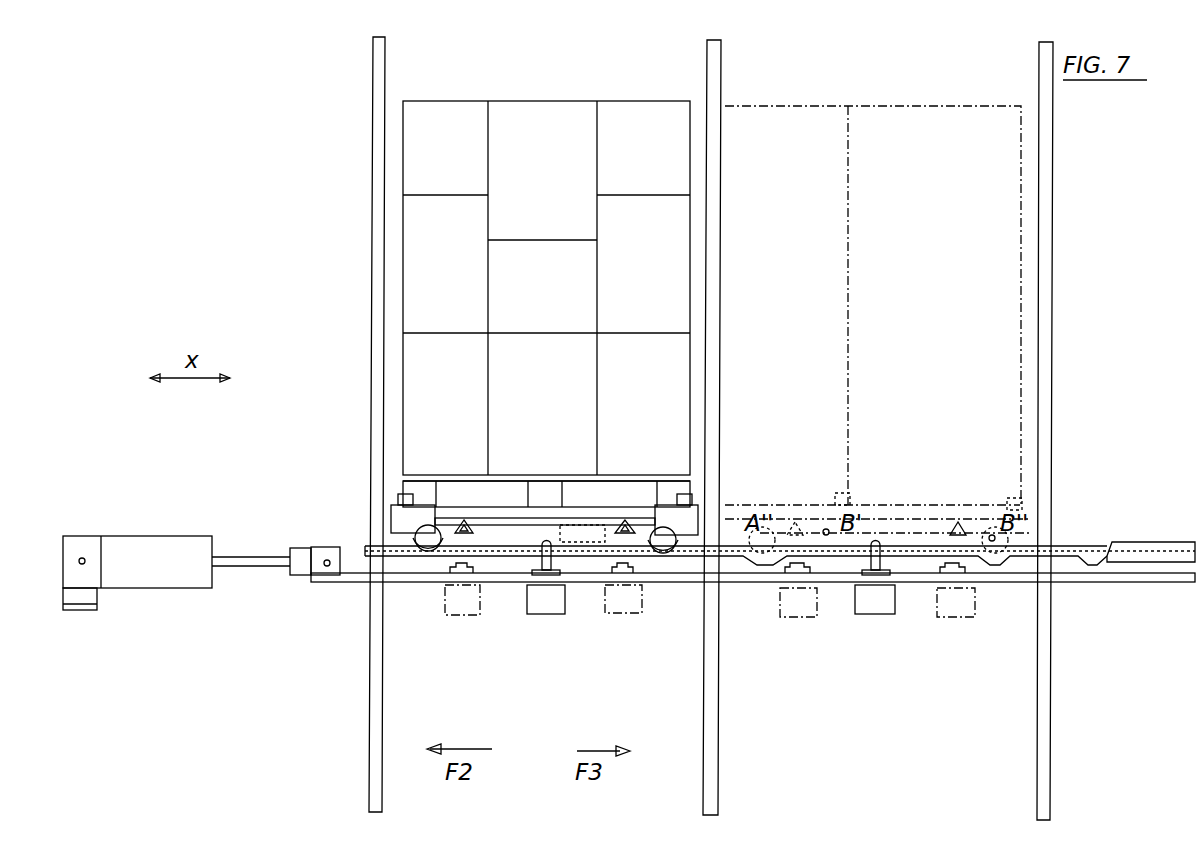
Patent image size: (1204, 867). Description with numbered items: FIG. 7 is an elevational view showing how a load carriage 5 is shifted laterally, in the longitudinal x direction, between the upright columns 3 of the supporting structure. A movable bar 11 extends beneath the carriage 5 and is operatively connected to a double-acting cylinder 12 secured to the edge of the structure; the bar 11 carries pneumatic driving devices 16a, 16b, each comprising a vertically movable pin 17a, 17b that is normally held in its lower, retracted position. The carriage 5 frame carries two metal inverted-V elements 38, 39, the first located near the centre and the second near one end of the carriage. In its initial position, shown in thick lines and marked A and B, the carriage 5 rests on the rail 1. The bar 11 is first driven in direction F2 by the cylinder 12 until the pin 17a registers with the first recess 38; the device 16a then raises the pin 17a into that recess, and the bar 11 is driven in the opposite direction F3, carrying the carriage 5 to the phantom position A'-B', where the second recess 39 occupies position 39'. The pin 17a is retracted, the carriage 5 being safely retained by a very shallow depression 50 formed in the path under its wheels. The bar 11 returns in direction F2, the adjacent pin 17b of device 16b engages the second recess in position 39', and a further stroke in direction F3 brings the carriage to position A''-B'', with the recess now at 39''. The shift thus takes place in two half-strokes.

The rail 1 is at (1136, 548).
The column 3 is at (380, 185).
The carriage 5 is at (405, 515).
The movable bar 11 is at (312, 583).
The double-acting cylinder 12 is at (143, 558).
The pneumatic driving device 16a is at (547, 598).
The pneumatic driving device 16b is at (877, 600).
The vertical pin 17a is at (540, 566).
The vertical pin 17b is at (872, 560).
The V-shaped element 38 is at (452, 535).
The V-shaped element 39 is at (619, 597).
The second recess in intermediate position 39' is at (793, 505).
The second recess in final position 39'' is at (961, 505).
The shallow depression 50 is at (596, 548).